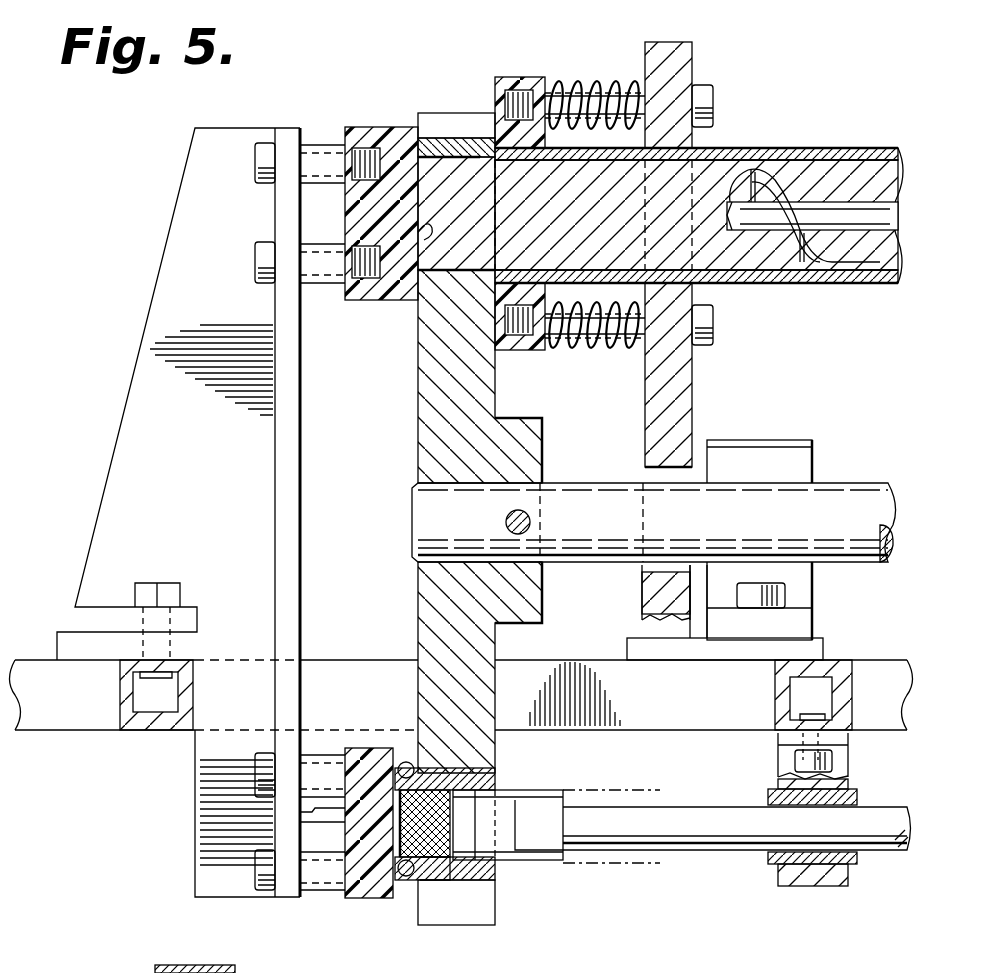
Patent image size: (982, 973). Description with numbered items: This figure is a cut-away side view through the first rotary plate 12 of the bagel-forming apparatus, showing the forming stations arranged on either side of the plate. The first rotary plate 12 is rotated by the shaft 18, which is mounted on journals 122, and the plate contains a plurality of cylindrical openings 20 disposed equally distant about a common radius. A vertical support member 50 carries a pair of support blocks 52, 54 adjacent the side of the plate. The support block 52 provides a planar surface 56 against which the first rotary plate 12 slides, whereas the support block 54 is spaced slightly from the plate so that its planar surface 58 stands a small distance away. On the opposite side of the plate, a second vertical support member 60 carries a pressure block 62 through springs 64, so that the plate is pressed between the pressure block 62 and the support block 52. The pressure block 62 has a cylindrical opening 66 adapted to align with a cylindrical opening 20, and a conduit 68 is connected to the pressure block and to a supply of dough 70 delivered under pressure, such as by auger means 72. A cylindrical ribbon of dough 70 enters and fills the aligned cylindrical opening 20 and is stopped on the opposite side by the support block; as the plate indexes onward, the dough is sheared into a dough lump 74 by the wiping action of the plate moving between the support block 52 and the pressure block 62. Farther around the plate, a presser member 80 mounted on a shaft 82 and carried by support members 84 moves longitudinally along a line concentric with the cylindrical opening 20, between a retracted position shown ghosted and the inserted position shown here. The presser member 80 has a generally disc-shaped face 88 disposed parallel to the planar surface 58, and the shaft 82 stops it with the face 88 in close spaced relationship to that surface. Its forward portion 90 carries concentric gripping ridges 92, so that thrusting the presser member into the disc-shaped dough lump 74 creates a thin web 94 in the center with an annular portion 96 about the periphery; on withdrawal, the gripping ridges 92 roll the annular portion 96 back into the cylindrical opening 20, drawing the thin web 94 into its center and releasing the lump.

The first rotary plate 12 is at (465, 448).
The shaft 18 is at (855, 520).
The cylindrical openings 20 is at (436, 162).
The vertical support member 50 is at (192, 286).
The support block 52 is at (372, 135).
The support block 54 is at (360, 760).
The planar surface 56 is at (422, 240).
The planar surface 58 is at (410, 872).
The second vertical support member 60 is at (662, 387).
The pressure block 62 is at (522, 95).
The springs 64 is at (640, 100).
The cylindrical opening 66 is at (518, 300).
The conduit 68 is at (800, 286).
The dough 70 is at (722, 185).
The auger means 72 is at (855, 215).
The dough lump 74 is at (478, 782).
The presser member 80 is at (548, 798).
The shaft 82 is at (735, 820).
The support members 84 is at (828, 870).
The disc-shaped face 88 is at (398, 835).
The forward portion 90 is at (470, 825).
The gripping ridges 92 is at (440, 870).
The thin web 94 is at (300, 817).
The annular portion 96 is at (408, 760).
The journals 122 is at (770, 470).